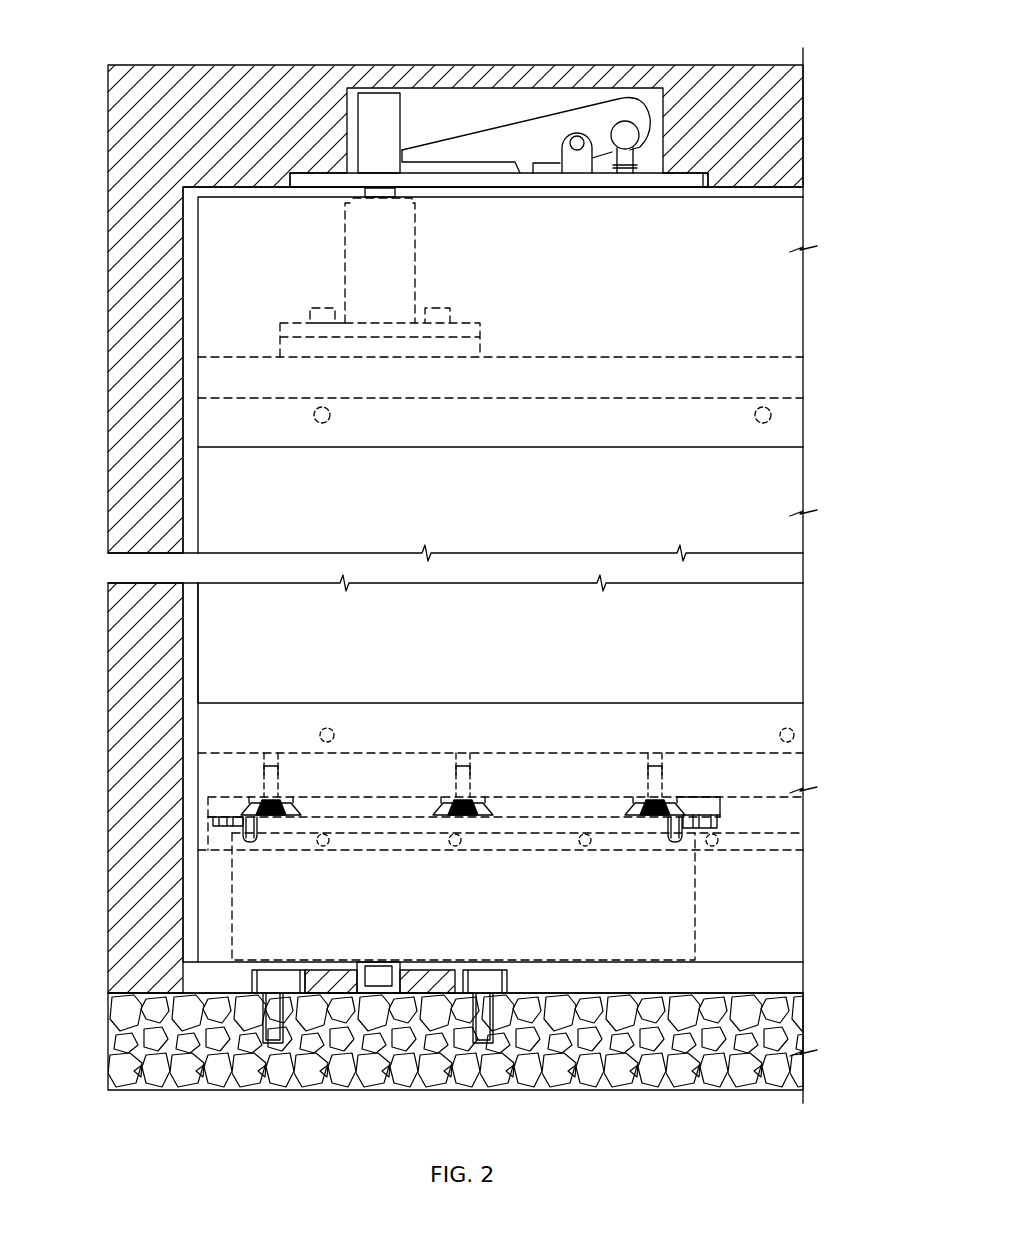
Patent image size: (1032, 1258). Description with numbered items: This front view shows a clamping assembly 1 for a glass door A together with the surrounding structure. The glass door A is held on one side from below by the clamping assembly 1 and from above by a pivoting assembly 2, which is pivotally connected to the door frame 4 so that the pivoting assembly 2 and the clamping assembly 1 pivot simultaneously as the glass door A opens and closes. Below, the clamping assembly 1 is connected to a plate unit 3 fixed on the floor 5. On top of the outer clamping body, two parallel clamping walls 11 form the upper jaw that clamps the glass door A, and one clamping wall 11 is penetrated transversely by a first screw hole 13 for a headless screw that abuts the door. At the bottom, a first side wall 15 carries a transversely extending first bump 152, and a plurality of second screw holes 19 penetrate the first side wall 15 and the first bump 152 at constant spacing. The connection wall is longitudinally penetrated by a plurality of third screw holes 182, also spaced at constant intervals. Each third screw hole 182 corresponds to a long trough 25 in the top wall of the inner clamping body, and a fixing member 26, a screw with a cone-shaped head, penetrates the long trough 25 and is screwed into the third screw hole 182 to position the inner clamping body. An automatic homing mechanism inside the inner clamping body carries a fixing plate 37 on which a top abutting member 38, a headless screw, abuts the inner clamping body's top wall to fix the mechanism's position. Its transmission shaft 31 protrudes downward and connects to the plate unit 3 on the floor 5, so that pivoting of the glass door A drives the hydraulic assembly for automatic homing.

The door frame 4 is at (276, 100).
The pivoting assembly 2 is at (176, 226).
The glass door A is at (228, 628).
The clamping walls 11 is at (223, 712).
The first screw hole 13 is at (320, 737).
The third screw hole 182 is at (262, 758).
The fixing plate 37 is at (208, 820).
The top abutting member 38 is at (210, 828).
The first bump 152 is at (210, 851).
The second screw hole 19 is at (313, 851).
The first side wall 15 is at (208, 935).
The clamping assembly 1 is at (176, 963).
The floor 5 is at (120, 1045).
The plate unit 3 is at (243, 985).
The transmission shaft 31 is at (380, 978).
The fixing member 26 is at (660, 775).
The long trough 25 is at (680, 800).